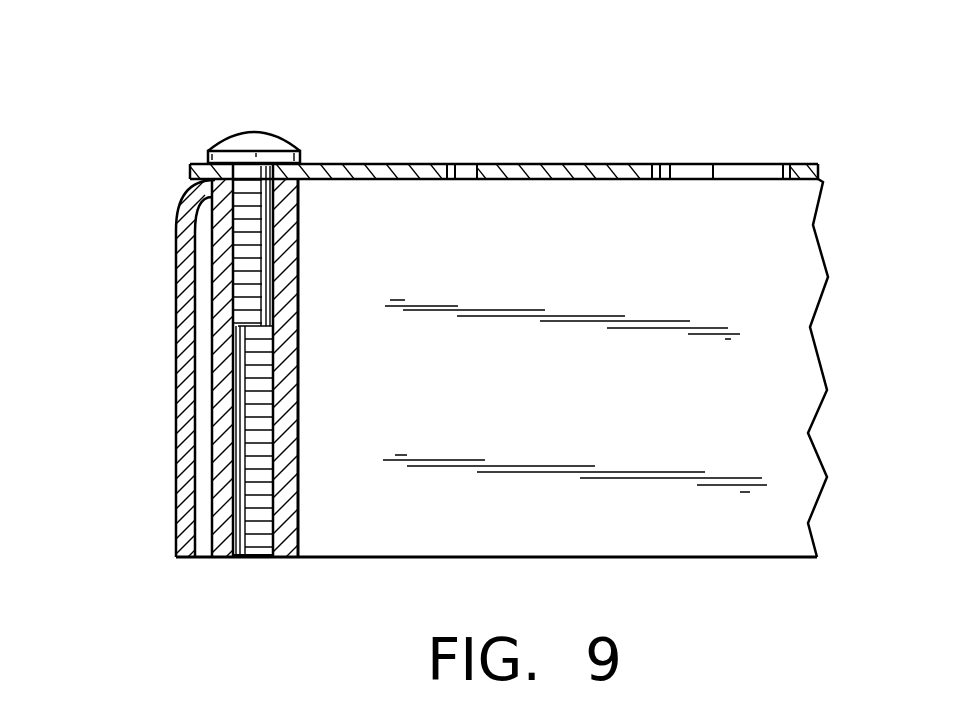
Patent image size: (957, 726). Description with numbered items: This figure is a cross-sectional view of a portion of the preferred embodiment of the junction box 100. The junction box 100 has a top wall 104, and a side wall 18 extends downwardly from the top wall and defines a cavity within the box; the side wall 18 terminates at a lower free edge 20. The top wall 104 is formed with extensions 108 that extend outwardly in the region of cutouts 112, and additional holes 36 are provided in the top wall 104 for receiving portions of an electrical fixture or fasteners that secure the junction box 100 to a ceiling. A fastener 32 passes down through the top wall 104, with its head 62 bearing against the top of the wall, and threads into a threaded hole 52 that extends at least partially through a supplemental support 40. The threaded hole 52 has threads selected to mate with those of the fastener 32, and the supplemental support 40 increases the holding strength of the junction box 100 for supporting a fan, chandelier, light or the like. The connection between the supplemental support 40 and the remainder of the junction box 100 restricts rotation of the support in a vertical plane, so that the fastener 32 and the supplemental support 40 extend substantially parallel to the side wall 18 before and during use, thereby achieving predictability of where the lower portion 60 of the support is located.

The side wall 18 is at (176, 270).
The lower free edge 20 is at (385, 558).
The fastener 32 is at (310, 314).
The holes 36 is at (457, 181).
The supplemental support 40 is at (310, 376).
The threaded hole 52 is at (250, 557).
The lower portion 60 is at (298, 547).
The head 62 is at (295, 148).
The junction box 100 is at (126, 381).
The top wall 104 is at (455, 163).
The extensions 108 is at (200, 165).
The cutouts 112 is at (178, 187).